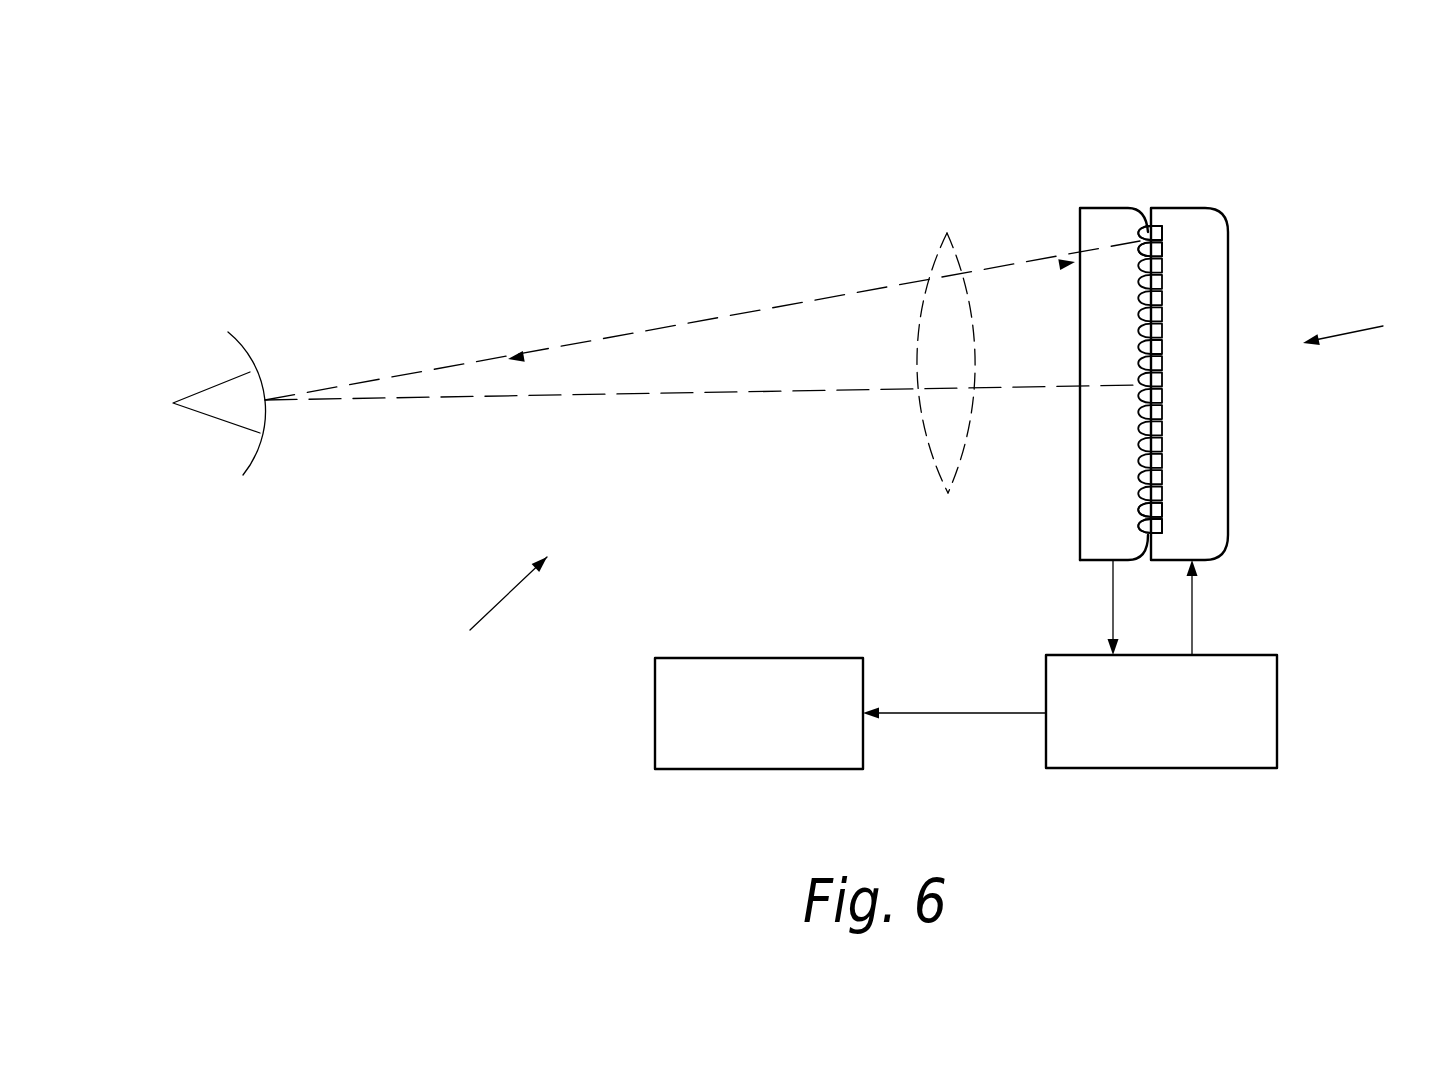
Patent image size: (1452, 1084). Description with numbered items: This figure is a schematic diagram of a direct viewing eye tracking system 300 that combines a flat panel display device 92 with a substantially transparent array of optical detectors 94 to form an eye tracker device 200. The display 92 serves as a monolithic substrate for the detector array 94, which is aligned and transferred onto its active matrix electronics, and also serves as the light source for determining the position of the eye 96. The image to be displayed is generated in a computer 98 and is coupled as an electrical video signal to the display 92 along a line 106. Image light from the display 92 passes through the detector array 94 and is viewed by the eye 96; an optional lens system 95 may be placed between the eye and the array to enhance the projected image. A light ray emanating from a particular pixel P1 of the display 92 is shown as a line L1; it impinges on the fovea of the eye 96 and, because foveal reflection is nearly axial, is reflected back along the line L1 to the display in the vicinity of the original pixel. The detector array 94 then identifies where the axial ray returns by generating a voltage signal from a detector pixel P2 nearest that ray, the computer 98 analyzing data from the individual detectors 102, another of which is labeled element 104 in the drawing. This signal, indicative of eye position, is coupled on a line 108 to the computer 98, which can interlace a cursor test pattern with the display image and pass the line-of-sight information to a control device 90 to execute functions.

The control device 90 is at (805, 657).
The flat panel display device 92 is at (1224, 209).
The transparent array of optical detectors 94 is at (1114, 200).
The lens system 95 is at (938, 248).
The eye 96 is at (192, 533).
The computer 98 is at (1278, 698).
The individual detectors 102 is at (1140, 525).
The detector element 104 is at (1163, 508).
The line 106 is at (1195, 608).
The line 108 is at (1113, 600).
The eye tracker device 200 is at (1374, 326).
The direct viewing eye tracking system 300 is at (485, 613).
The line L1 is at (715, 322).
The pixel P1 is at (1163, 251).
The detector pixel P2 is at (1141, 228).